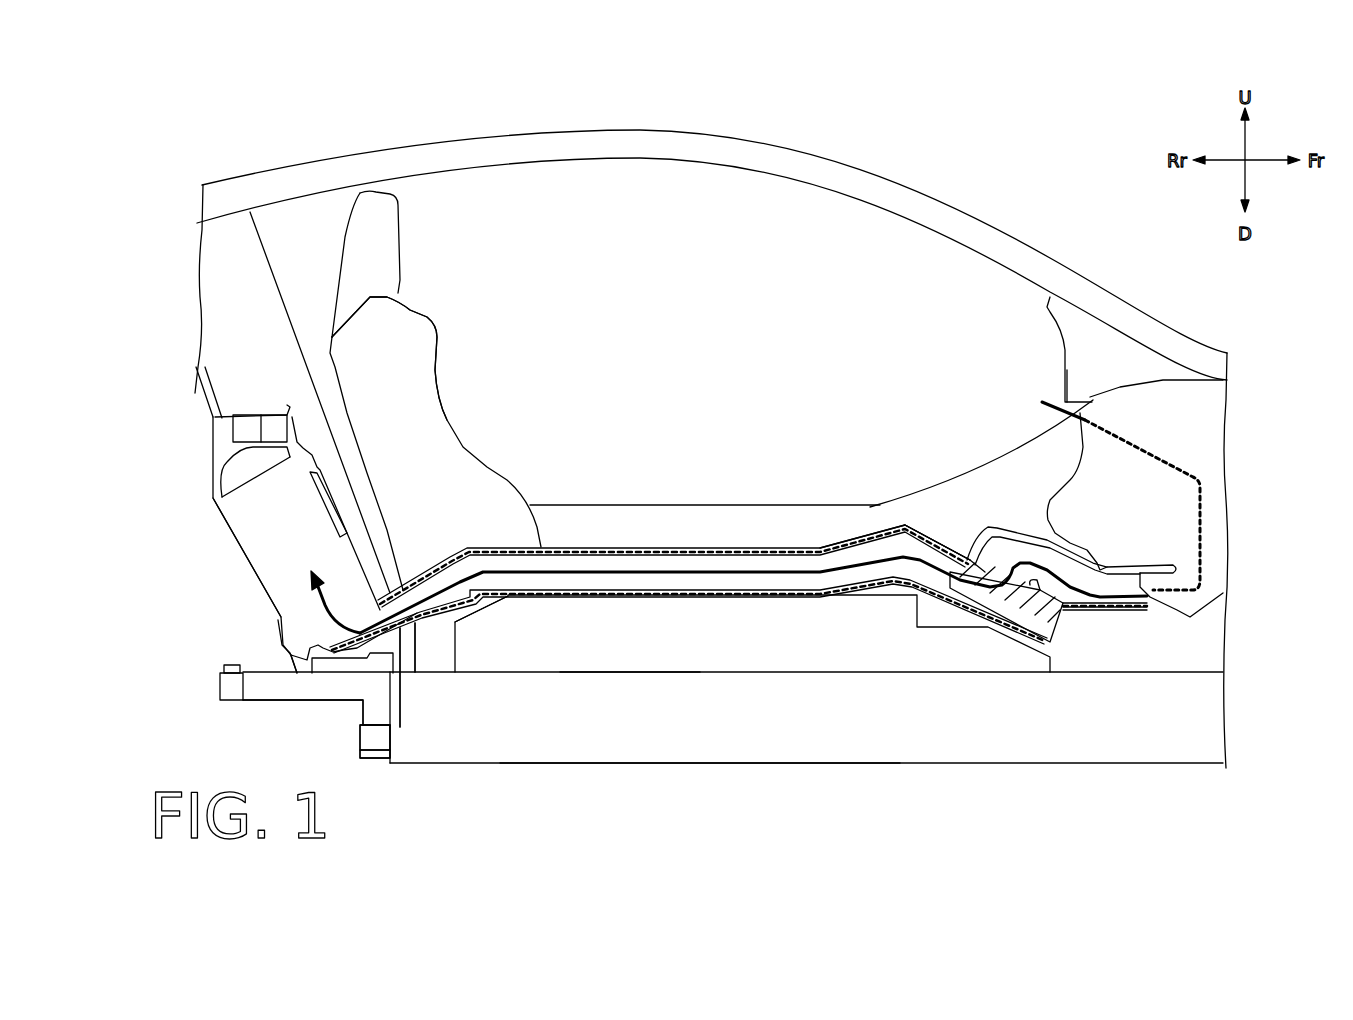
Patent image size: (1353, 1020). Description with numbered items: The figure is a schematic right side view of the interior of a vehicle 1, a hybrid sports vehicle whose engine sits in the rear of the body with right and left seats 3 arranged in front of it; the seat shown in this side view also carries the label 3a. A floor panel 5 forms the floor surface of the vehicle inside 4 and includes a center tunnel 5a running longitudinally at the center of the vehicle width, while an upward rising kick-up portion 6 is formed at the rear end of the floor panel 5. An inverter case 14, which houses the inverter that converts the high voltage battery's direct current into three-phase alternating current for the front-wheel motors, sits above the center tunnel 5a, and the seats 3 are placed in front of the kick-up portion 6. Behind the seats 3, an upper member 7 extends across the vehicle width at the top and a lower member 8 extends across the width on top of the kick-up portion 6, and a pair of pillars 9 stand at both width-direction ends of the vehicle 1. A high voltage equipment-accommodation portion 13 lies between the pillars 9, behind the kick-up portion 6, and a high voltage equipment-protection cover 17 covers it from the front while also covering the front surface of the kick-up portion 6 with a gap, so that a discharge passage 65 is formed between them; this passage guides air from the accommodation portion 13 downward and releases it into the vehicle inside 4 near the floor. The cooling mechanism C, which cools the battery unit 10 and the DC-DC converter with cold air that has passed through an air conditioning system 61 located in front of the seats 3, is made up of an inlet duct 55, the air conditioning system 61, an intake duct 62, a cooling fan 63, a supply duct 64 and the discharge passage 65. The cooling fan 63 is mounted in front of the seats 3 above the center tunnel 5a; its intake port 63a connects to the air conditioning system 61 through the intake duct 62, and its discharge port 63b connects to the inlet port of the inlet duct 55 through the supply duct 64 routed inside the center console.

The vehicle 1 is at (1010, 192).
The seats 3 is at (410, 355).
The seat back 3a is at (389, 358).
The vehicle inside 4 is at (824, 259).
The floor panel 5 is at (697, 748).
The center tunnel 5a is at (623, 705).
The kick-up portion 6 is at (392, 740).
The upper member 7 is at (213, 432).
The lower member 8 is at (278, 655).
The pillars 9 is at (235, 265).
The battery unit 10 is at (270, 518).
The high voltage equipment-accommodation portion 13 is at (242, 555).
The inverter case 14 is at (728, 630).
The high voltage equipment-protection cover 17 is at (400, 703).
The inlet duct 55 is at (422, 583).
The air conditioning system 61 is at (1096, 396).
The intake duct 62 is at (1115, 607).
The cooling fan 63 is at (1028, 612).
The intake port 63a is at (995, 570).
The discharge port 63b is at (957, 585).
The supply duct 64 is at (648, 545).
The discharge passage 65 is at (400, 703).
The cooling mechanism C is at (909, 525).